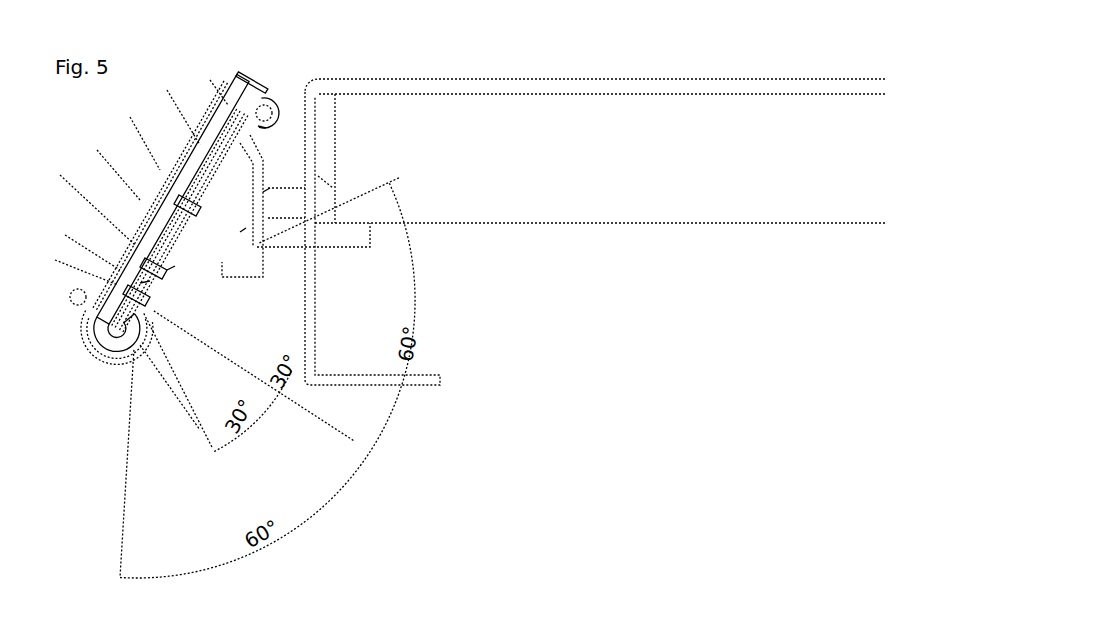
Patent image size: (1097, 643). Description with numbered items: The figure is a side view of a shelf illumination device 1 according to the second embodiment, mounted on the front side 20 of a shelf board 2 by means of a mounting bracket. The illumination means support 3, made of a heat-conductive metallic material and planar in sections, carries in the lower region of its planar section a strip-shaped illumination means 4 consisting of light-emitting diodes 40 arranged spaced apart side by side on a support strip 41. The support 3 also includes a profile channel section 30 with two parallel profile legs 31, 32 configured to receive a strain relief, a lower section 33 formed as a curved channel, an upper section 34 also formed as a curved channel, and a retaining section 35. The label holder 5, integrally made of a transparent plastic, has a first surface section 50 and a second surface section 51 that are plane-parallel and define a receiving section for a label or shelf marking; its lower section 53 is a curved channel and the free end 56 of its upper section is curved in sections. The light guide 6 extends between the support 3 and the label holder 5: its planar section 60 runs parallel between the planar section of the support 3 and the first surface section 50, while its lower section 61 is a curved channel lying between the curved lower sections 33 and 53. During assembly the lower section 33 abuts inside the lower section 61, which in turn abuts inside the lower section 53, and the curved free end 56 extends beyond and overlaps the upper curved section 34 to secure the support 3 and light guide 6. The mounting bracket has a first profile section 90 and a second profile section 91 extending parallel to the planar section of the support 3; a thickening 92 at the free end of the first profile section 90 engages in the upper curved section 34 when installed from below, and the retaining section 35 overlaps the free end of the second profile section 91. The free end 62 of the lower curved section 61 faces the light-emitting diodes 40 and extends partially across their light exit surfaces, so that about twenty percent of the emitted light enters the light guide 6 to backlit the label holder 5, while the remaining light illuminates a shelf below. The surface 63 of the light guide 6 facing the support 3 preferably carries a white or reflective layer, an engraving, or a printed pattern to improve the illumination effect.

The shelf illumination device 1 is at (235, 307).
The shelf board 2 is at (612, 78).
The illumination means support 3 is at (222, 157).
The illumination means 4 is at (157, 275).
The label holder 5 is at (253, 83).
The light guide 6 is at (108, 352).
The front side 20 is at (310, 170).
The profile channel section 30 is at (269, 318).
The profile leg 31 is at (250, 240).
The profile leg 32 is at (265, 190).
The lower section 33 is at (117, 343).
The upper section 34 is at (270, 107).
The retaining section 35 is at (178, 263).
The light-emitting diodes 40 is at (148, 297).
The support strip 41 is at (150, 283).
The first surface section 50 is at (192, 163).
The second surface section 51 is at (205, 123).
The lower section 53 is at (124, 355).
The free end 56 is at (262, 120).
The planar section 60 is at (165, 230).
The lower section 61 is at (143, 345).
The free end 62 is at (145, 310).
The surface 63 is at (178, 222).
The first profile section 90 is at (265, 125).
The second profile section 91 is at (165, 244).
The thickening 92 is at (262, 114).